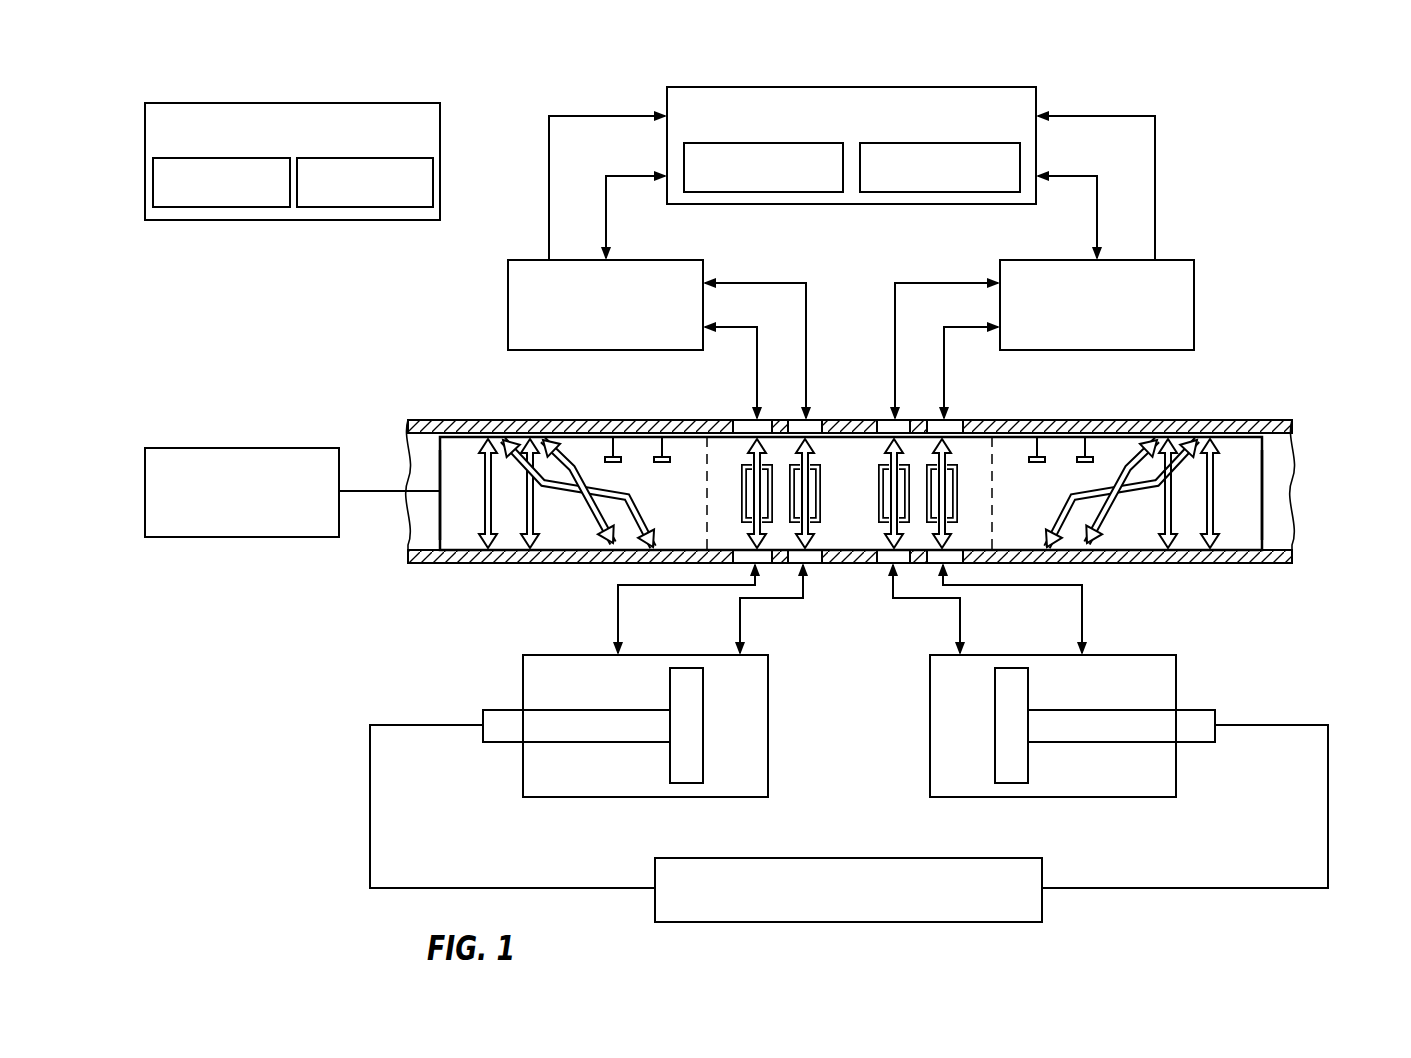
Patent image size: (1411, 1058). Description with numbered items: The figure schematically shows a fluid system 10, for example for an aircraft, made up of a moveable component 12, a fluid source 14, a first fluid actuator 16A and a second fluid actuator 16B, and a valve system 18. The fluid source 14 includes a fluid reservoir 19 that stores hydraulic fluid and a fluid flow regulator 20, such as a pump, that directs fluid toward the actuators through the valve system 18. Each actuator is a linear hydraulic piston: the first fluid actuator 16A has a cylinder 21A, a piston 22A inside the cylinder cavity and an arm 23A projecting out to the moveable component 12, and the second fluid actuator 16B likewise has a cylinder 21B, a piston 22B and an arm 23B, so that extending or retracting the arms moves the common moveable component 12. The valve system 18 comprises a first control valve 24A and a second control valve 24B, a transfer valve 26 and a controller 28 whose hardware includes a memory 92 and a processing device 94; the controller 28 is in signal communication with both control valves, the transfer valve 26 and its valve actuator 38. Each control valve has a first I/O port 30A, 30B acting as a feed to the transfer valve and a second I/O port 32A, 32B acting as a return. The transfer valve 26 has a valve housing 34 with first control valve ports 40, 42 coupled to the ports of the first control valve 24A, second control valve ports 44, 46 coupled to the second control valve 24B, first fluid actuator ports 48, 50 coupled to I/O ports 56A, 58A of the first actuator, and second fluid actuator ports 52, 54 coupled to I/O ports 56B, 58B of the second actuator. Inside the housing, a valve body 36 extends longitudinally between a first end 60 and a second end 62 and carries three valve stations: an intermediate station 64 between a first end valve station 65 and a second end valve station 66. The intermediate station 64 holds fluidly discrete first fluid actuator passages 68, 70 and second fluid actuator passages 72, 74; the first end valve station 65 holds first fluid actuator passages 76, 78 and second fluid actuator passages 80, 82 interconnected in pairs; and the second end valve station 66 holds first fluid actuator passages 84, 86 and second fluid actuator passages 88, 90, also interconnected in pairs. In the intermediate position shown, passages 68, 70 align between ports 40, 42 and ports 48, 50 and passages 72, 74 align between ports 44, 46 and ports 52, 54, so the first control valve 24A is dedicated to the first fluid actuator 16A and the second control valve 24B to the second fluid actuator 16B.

The fluid system 10 is at (1240, 104).
The moveable component 12 is at (942, 899).
The fluid source 14 is at (945, 130).
The first fluid actuator 16A is at (620, 771).
The second fluid actuator 16B is at (1080, 771).
The valve system 18 is at (1243, 234).
The fluid reservoir 19 is at (952, 181).
The fluid flow regulator 20 is at (777, 181).
The cylinder 21A is at (768, 772).
The cylinder 21B is at (930, 757).
The piston 22A is at (688, 783).
The piston 22B is at (1010, 783).
The arm 23A is at (553, 742).
The arm 23B is at (1145, 742).
The first control valve 24A is at (628, 334).
The second control valve 24B is at (1119, 334).
The transfer valve 26 is at (1264, 398).
The controller 28 is at (378, 146).
The first I/O port 30A is at (705, 283).
The first I/O port 30B is at (998, 283).
The second I/O port 32A is at (705, 327).
The second I/O port 32B is at (998, 327).
The valve housing 34 is at (1300, 424).
The valve body 36 is at (1270, 473).
The valve actuator 38 is at (255, 521).
The first control valve port 40 is at (812, 422).
The first control valve port 42 is at (745, 425).
The second control valve port 44 is at (883, 425).
The second control valve port 46 is at (958, 424).
The first fluid actuator port 48 is at (810, 567).
The first fluid actuator port 50 is at (760, 568).
The second fluid actuator port 52 is at (884, 567).
The second fluid actuator port 54 is at (937, 567).
The I/O port 56A is at (738, 650).
The I/O port 56B is at (962, 650).
The I/O port 58A is at (616, 650).
The I/O port 58B is at (1084, 650).
The first end 60 is at (438, 531).
The second end 62 is at (1262, 532).
The intermediate station 64 is at (862, 514).
The first end valve station 65 is at (688, 514).
The second end valve station 66 is at (1037, 514).
The first fluid actuator passage 68 is at (817, 463).
The first fluid actuator passage 70 is at (766, 463).
The second fluid actuator passage 72 is at (906, 463).
The second fluid actuator passage 74 is at (955, 463).
The first fluid actuator passage 76 is at (528, 527).
The first fluid actuator passage 78 is at (482, 510).
The second fluid actuator passage 80 is at (597, 513).
The second fluid actuator passage 82 is at (640, 510).
The first fluid actuator passage 84 is at (1108, 512).
The first fluid actuator passage 86 is at (1060, 510).
The second fluid actuator passage 88 is at (1177, 522).
The second fluid actuator passage 90 is at (1217, 515).
The memory 92 is at (234, 196).
The processing device 94 is at (377, 196).